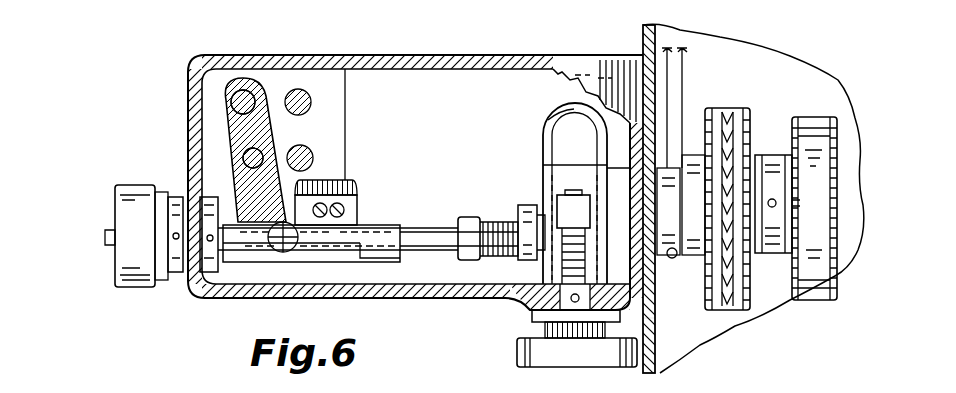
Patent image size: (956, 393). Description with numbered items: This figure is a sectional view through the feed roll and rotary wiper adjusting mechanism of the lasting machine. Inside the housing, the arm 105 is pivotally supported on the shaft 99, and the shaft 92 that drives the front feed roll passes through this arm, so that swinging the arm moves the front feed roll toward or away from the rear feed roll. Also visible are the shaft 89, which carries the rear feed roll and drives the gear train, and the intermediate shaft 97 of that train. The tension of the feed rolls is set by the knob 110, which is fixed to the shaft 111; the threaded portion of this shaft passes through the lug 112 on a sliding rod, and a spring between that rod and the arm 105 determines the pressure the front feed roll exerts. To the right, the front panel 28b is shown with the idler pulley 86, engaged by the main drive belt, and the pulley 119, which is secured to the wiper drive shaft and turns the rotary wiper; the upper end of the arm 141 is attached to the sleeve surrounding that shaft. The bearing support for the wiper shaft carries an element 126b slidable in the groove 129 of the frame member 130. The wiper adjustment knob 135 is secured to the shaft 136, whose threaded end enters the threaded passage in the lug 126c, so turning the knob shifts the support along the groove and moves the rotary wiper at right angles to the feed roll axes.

The front panel 28b is at (643, 38).
The idler pulley 86 is at (746, 120).
The shaft 89 is at (313, 158).
The shaft 92 is at (232, 154).
The shaft 97 is at (311, 102).
The shaft 99 is at (244, 89).
The arm 105 is at (233, 120).
The knob 110 is at (128, 248).
The shaft 111 is at (408, 232).
The lug 112 is at (468, 216).
The pulley 119 is at (840, 125).
The element 126b is at (548, 136).
The lug 126c is at (558, 206).
The groove 129 is at (548, 120).
The frame member 130 is at (655, 318).
The wiper adjustment knob 135 is at (525, 348).
The shaft 136 is at (515, 300).
The arm 141 is at (680, 62).